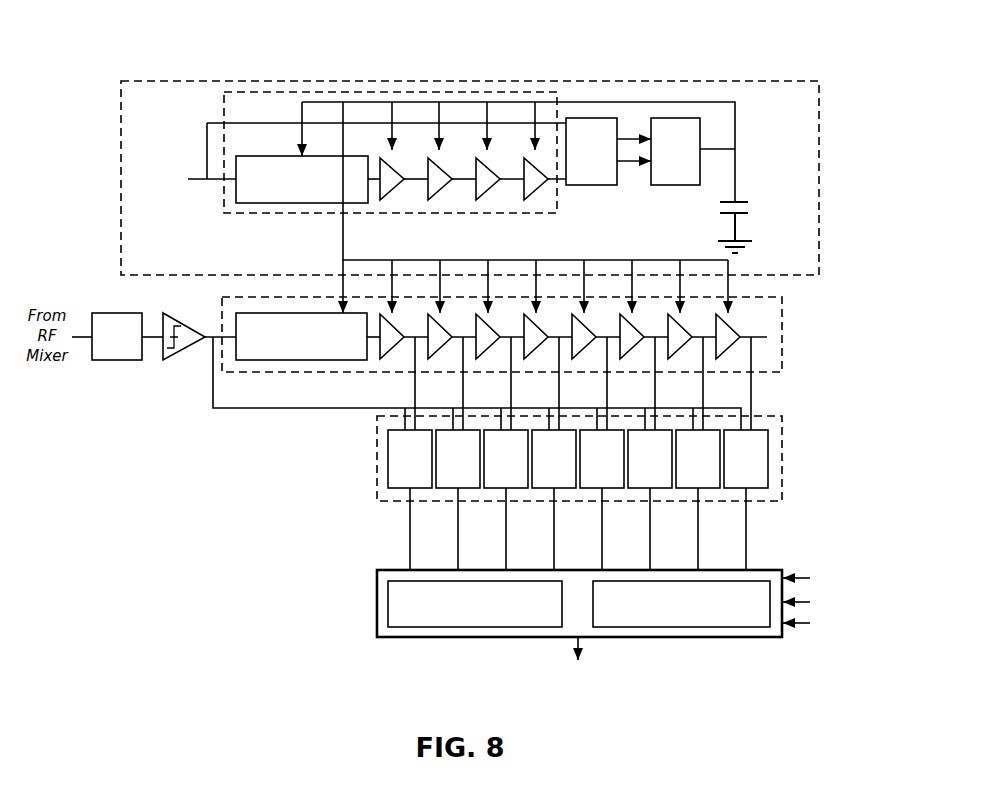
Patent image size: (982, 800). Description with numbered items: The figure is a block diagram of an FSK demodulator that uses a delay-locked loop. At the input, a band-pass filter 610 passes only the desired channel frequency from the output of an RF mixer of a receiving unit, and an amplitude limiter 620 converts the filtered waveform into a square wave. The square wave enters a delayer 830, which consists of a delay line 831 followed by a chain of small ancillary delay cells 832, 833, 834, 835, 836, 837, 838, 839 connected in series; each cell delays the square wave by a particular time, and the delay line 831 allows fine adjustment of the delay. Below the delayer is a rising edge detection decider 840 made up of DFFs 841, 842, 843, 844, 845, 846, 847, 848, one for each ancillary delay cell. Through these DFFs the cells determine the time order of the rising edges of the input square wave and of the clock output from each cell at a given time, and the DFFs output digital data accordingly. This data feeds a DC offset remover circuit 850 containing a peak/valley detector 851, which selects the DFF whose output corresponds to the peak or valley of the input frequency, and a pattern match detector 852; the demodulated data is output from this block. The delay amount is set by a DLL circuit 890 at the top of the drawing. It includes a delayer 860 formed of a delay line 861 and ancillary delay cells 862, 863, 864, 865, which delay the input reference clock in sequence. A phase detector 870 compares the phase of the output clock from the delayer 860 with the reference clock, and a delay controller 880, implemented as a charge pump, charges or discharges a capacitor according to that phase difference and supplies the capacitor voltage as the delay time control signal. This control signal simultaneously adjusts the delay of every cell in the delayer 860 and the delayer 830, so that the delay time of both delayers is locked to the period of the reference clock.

The band-pass filter 610 is at (112, 362).
The amplitude limiter 620 is at (186, 351).
The delayer 830 is at (787, 338).
The delay line 831 is at (234, 323).
The ancillary delay cell 832 is at (397, 352).
The ancillary delay cell 833 is at (445, 352).
The ancillary delay cell 834 is at (493, 352).
The ancillary delay cell 835 is at (541, 352).
The ancillary delay cell 836 is at (589, 352).
The ancillary delay cell 837 is at (637, 352).
The ancillary delay cell 838 is at (685, 352).
The ancillary delay cell 839 is at (733, 352).
The rising edge detection decider 840 is at (795, 433).
The DFF 841 is at (425, 490).
The DFF 842 is at (467, 490).
The DFF 843 is at (521, 490).
The DFF 844 is at (563, 490).
The DFF 845 is at (617, 490).
The DFF 846 is at (659, 490).
The DFF 847 is at (713, 490).
The DFF 848 is at (755, 490).
The DC offset remover circuit 850 is at (377, 608).
The peak/valley detector 851 is at (476, 628).
The pattern match detector 852 is at (668, 628).
The delayer 860 is at (357, 84).
The delay line 861 is at (235, 191).
The ancillary delay cell 862 is at (397, 188).
The ancillary delay cell 863 is at (449, 188).
The ancillary delay cell 864 is at (489, 188).
The ancillary delay cell 865 is at (544, 188).
The phase detector 870 is at (592, 118).
The delay controller 880 is at (676, 118).
The DLL circuit 890 is at (491, 91).